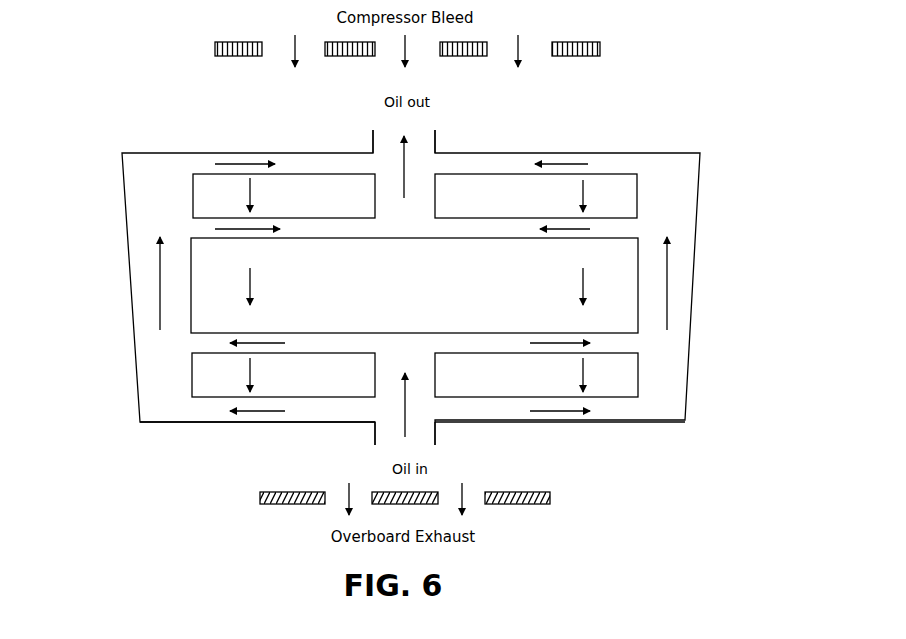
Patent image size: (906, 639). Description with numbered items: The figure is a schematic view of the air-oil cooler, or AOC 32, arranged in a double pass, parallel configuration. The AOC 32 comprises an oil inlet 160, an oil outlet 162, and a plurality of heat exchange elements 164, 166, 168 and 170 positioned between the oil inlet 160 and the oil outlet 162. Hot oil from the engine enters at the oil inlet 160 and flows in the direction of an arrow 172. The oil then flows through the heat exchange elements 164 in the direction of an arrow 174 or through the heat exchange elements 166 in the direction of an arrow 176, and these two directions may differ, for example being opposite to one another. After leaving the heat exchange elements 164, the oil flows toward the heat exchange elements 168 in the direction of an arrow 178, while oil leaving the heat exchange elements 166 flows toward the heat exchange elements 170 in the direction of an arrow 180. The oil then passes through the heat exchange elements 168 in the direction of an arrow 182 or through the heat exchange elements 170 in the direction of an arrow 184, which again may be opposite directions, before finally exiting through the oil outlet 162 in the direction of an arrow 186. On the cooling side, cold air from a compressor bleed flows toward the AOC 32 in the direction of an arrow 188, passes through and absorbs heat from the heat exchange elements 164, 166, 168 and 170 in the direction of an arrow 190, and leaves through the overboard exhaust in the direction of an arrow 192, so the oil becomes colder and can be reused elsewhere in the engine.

The air-oil cooler 32 is at (100, 183).
The oil inlet 160 is at (390, 429).
The oil outlet 162 is at (417, 133).
The heat exchange elements 164 is at (230, 423).
The heat exchange elements 166 is at (560, 422).
The heat exchange elements 168 is at (248, 240).
The heat exchange elements 170 is at (566, 240).
The arrow 172 is at (405, 405).
The arrow 174 is at (250, 343).
The arrow 176 is at (568, 343).
The arrow 178 is at (160, 298).
The arrow 180 is at (667, 278).
The arrow 182 is at (226, 161).
The arrow 184 is at (558, 163).
The arrow 186 is at (398, 168).
The arrow 188 is at (510, 54).
The arrow 190 is at (586, 192).
The arrow 192 is at (463, 494).